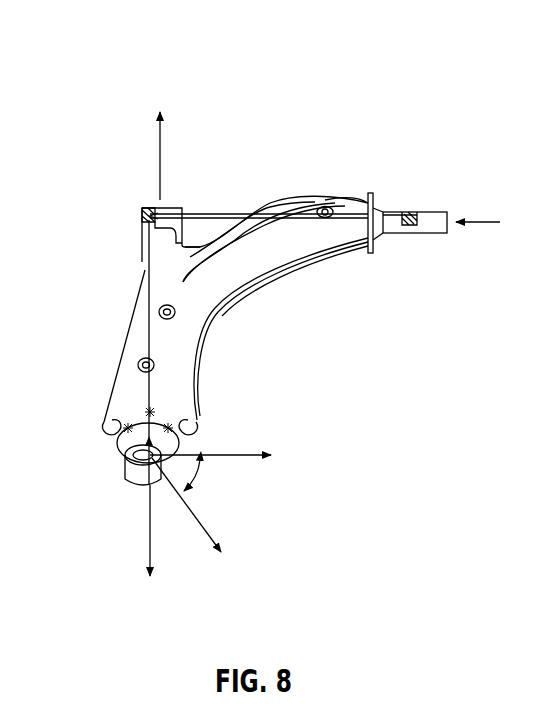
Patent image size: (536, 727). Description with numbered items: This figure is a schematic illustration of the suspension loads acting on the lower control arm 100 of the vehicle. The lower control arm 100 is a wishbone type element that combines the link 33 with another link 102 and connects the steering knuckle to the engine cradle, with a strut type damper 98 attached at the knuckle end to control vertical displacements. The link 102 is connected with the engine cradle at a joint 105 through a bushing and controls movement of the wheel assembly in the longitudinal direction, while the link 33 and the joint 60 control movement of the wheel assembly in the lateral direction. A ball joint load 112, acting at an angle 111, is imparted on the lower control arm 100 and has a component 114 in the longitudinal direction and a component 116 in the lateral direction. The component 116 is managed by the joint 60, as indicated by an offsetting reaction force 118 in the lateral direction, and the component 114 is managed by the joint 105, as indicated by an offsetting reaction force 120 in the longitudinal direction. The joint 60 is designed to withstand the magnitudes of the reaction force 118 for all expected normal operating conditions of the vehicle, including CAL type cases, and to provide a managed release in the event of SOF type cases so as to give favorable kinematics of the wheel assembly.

The link 33 is at (145, 280).
The joint 60 is at (130, 229).
The strut type damper 98 is at (127, 470).
The lower control arm 100 is at (209, 285).
The link 102 is at (352, 205).
The joint 105 is at (385, 253).
The angle 111 is at (205, 478).
The ball joint load 112 is at (205, 530).
The component 114 is at (237, 452).
The component 116 is at (148, 518).
The reaction force 118 is at (157, 163).
The reaction force 120 is at (492, 189).